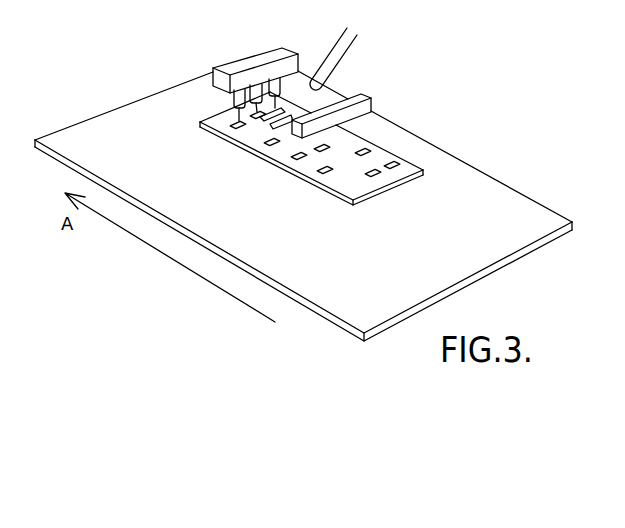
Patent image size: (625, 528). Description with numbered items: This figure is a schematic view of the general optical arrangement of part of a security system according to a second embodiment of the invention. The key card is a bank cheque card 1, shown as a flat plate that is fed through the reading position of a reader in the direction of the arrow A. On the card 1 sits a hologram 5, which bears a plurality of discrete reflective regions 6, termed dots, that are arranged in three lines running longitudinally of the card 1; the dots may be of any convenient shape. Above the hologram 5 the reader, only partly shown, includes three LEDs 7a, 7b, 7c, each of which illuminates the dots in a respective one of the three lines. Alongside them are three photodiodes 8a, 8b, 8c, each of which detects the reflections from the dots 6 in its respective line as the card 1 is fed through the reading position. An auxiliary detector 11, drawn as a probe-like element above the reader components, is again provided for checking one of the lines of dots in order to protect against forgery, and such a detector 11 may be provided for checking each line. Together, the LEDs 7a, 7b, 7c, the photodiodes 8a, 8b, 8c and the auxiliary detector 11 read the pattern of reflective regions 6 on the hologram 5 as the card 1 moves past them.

The card 1 is at (518, 193).
The hologram 5 is at (393, 183).
The reflective regions 6 is at (322, 176).
The LED 7a is at (233, 103).
The LED 7b is at (257, 88).
The LED 7c is at (274, 80).
The photodiode 8a is at (271, 126).
The photodiode 8b is at (285, 130).
The photodiode 8c is at (308, 100).
The auxiliary detector 11 is at (351, 45).